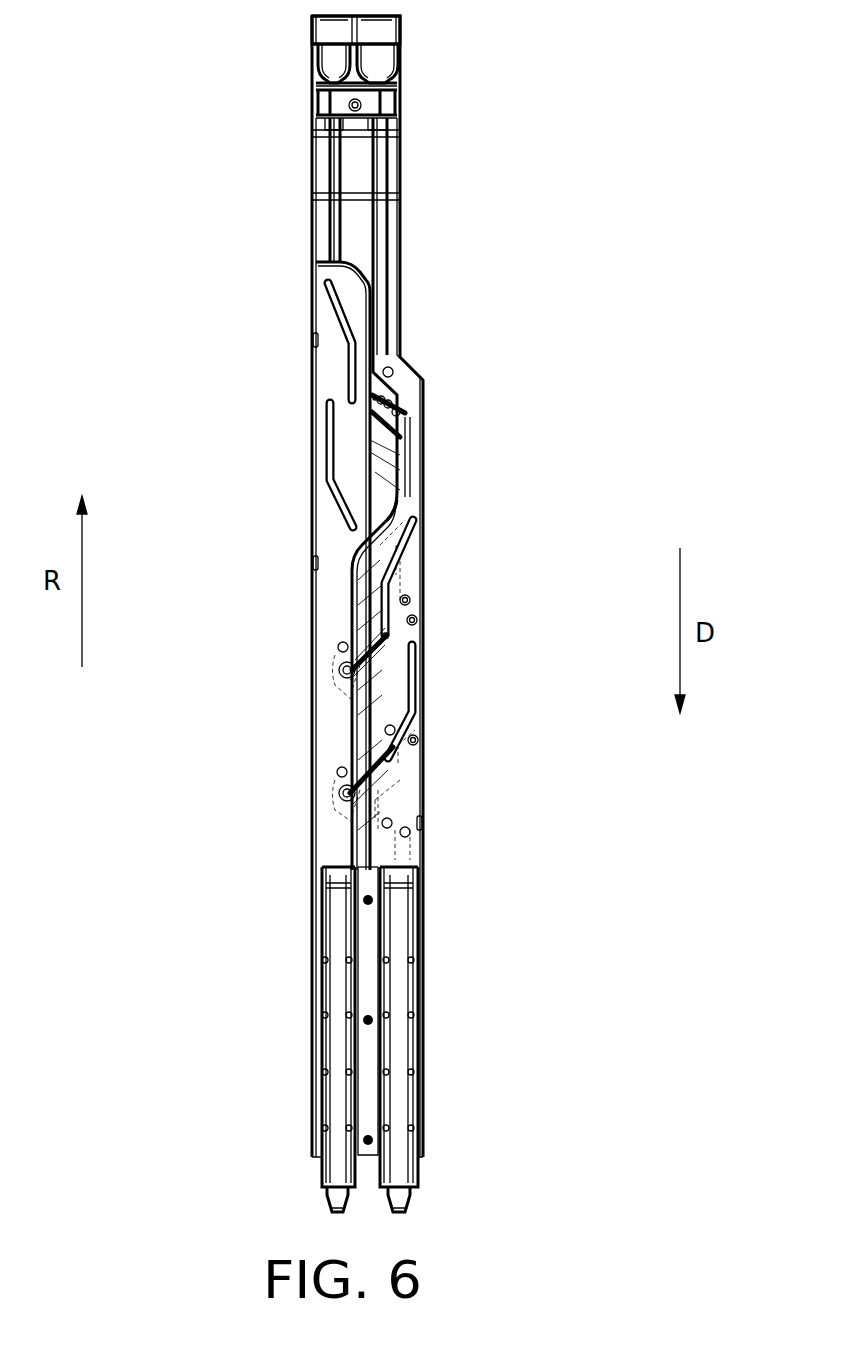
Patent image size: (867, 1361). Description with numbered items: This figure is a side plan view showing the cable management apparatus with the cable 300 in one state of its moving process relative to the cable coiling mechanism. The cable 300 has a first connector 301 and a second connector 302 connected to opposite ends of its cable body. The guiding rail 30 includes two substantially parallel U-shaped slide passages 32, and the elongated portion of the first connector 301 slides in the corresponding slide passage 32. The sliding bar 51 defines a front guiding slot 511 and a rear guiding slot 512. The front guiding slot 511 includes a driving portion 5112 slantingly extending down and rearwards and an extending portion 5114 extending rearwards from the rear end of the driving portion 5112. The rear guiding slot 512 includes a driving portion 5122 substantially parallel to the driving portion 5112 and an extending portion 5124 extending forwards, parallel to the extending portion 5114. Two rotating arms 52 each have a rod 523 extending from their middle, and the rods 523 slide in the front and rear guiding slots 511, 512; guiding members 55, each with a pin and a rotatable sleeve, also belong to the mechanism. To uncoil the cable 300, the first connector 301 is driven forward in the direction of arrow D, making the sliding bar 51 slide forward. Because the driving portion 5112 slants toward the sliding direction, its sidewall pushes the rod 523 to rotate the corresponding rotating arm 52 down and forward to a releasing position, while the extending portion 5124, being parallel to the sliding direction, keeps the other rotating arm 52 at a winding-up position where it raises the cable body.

The guiding rail 30 is at (373, 1100).
The cable 300 is at (378, 178).
The first connector 301 is at (397, 1103).
The second connector 302 is at (382, 58).
The slide passages 32 is at (400, 935).
The sliding bar 51 is at (402, 792).
The front guiding slot 511 is at (545, 653).
The driving portion 5112 is at (412, 723).
The extending portion 5114 is at (412, 657).
The rear guiding slot 512 is at (545, 523).
The driving portion 5122 is at (405, 550).
The extending portion 5124 is at (390, 610).
The rotating arms 52 is at (357, 642).
The rod 523 is at (353, 637).
The guiding members 55 is at (338, 773).